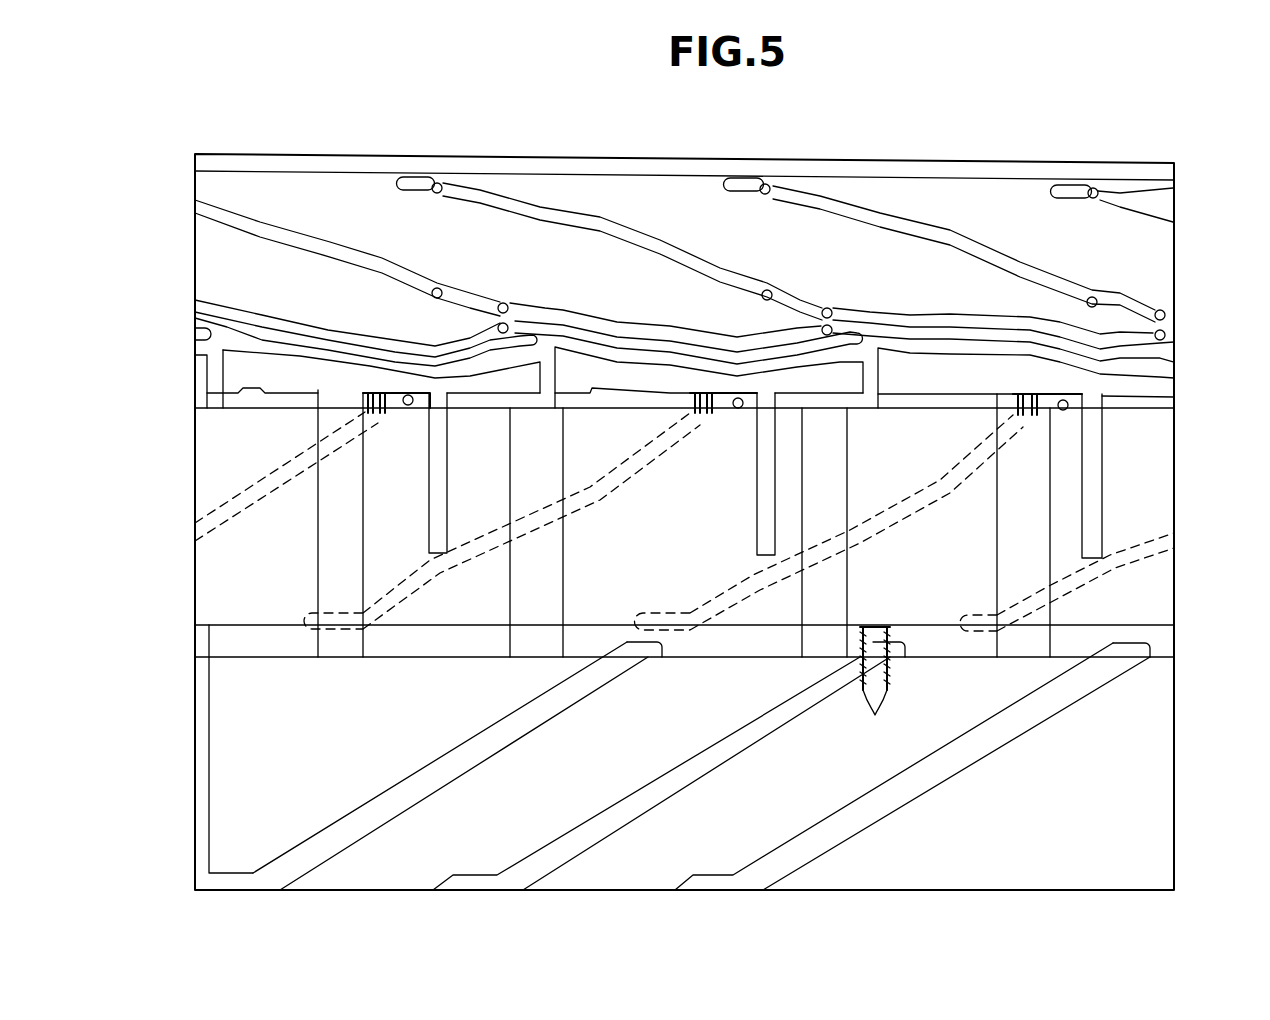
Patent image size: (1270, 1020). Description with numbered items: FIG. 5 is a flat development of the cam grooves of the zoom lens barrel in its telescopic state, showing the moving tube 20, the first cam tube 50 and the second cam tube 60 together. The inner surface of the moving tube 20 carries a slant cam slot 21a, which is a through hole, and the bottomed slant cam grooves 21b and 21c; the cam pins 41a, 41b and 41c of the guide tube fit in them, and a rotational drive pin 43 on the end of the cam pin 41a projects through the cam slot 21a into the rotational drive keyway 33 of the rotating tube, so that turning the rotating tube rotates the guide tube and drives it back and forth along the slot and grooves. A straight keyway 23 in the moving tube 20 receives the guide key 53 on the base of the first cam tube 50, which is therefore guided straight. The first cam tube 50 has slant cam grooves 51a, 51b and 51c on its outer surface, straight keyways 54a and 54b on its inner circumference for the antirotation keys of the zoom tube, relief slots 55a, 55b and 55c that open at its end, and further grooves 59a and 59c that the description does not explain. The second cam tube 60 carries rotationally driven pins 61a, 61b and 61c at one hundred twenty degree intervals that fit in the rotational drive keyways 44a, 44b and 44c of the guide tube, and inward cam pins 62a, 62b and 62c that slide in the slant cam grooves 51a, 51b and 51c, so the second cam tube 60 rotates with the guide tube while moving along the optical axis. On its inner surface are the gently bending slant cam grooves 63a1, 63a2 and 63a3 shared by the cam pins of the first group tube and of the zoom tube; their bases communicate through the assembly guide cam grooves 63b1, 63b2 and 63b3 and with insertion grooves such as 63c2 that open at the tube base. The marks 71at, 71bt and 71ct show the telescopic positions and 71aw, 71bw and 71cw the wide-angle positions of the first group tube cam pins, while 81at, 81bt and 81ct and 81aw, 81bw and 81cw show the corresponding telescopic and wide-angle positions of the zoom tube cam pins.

The moving tube 20 is at (1176, 762).
The slant cam slot 21a is at (736, 752).
The slant cam groove 21b is at (500, 747).
The slant cam groove 21c is at (950, 770).
The straight keyway 23 is at (210, 792).
The rotational drive keyway 33 is at (874, 716).
The cam pin 41a is at (896, 658).
The cam pin 41b is at (648, 660).
The cam pin 41c is at (1135, 660).
The rotational drive pin 43 is at (877, 626).
The rotational drive keyway 44a is at (1035, 417).
The rotational drive keyway 44b is at (711, 415).
The rotational drive keyway 44c is at (384, 415).
The first cam tube 50 is at (1176, 517).
The slant cam groove 51a is at (942, 495).
The slant cam groove 51b is at (615, 487).
The slant cam groove 51c is at (258, 502).
The guide key 53 is at (212, 642).
The straight keyway 54a is at (364, 530).
The straight keyway 54b is at (848, 464).
The relief slot 55a is at (448, 478).
The relief slot 55b is at (1100, 470).
The relief slot 55c is at (756, 545).
The ink passage 59a is at (1176, 542).
The ink passage 59c is at (567, 570).
The second cam tube 60 is at (1176, 355).
The rotationally driven pin 61a is at (1015, 413).
The rotationally driven pin 61b is at (692, 411).
The rotationally driven pin 61c is at (364, 411).
The cam pin 62a is at (1070, 411).
The cam pin 62b is at (740, 410).
The cam pin 62c is at (415, 405).
The slant cam groove 63a1 is at (437, 176).
The slant cam groove 63a2 is at (1073, 185).
The slant cam groove 63a3 is at (760, 177).
The guide cam groove for assembly 63b1 is at (225, 378).
The guide cam groove for assembly 63b2 is at (663, 352).
The guide cam groove for assembly 63b3 is at (342, 349).
The cam groove for insertion during assembly 63c2 is at (879, 380).
The telescopic position 71at is at (439, 195).
The wide-angle position 71aw is at (832, 308).
The telescopic position 71bt is at (1175, 189).
The wide-angle position 71bw is at (508, 302).
The telescopic position 71ct is at (763, 196).
The wide-angle position 71cw is at (1165, 311).
The telescopic position 81at is at (437, 287).
The wide-angle position 81aw is at (821, 331).
The telescopic position 81bt is at (1097, 300).
The wide-angle position 81bw is at (497, 329).
The telescopic position 81ct is at (771, 291).
The wide-angle position 81cw is at (1166, 335).